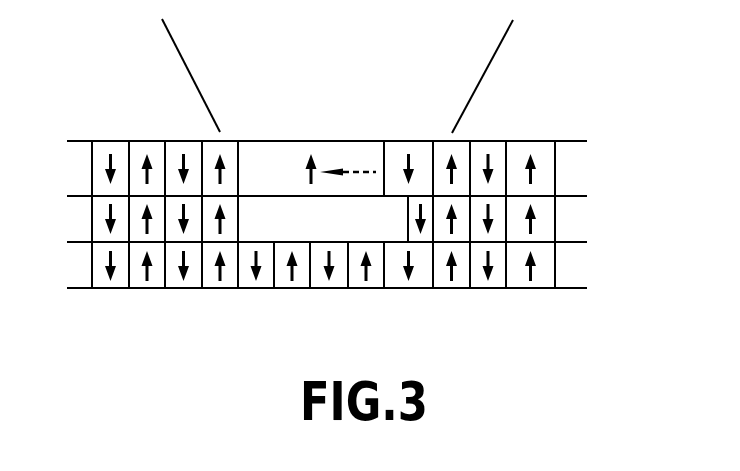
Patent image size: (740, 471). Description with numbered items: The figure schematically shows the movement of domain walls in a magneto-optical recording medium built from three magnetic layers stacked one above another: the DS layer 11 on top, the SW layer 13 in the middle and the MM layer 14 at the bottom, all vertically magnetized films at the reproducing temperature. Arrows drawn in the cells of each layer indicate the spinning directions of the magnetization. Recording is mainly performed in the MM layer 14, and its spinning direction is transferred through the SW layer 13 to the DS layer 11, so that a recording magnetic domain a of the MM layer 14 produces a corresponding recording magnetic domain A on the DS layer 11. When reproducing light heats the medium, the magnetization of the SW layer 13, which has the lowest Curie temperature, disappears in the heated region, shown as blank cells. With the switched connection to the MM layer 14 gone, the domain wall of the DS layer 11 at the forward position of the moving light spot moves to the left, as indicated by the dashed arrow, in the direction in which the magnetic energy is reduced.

The DS layer 11 is at (573, 171).
The SW layer 13 is at (573, 220).
The MM layer 14 is at (573, 265).
The recording magnetic domain A is at (416, 141).
The recording magnetic domain a is at (395, 282).